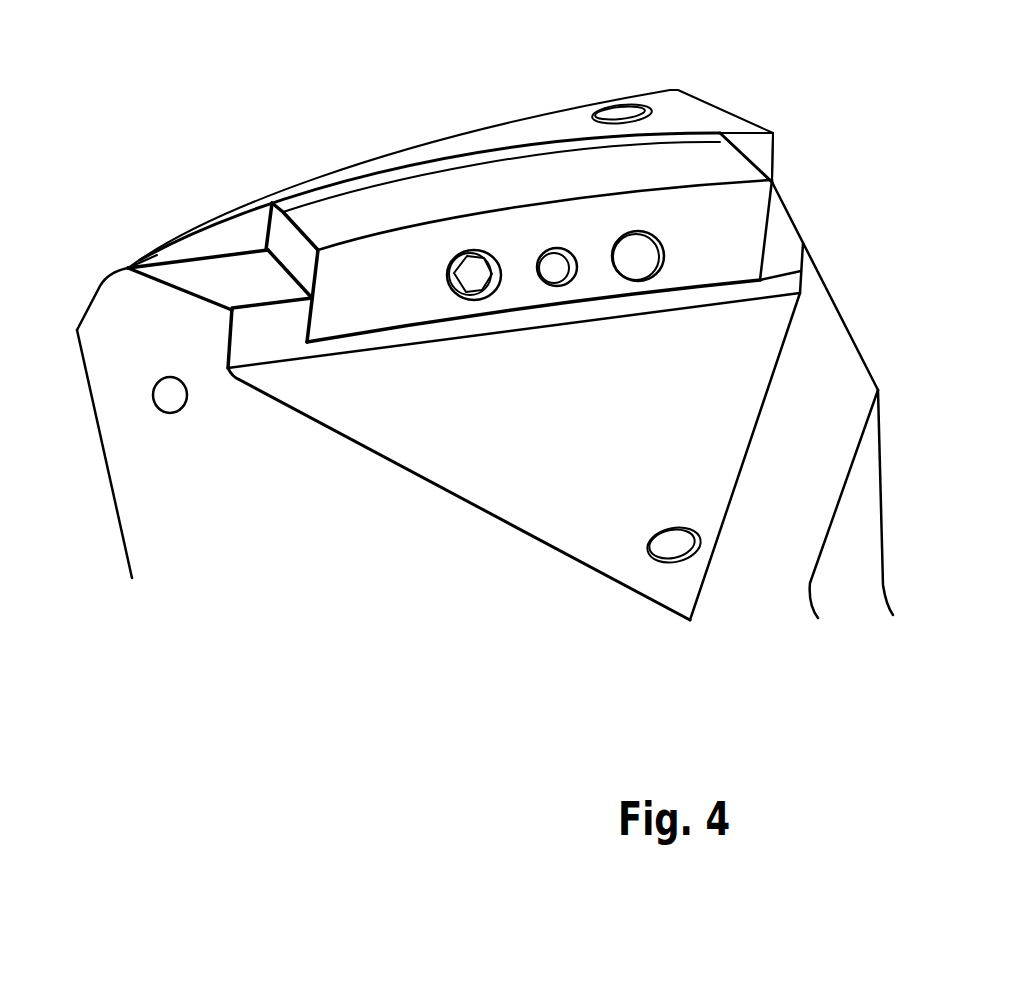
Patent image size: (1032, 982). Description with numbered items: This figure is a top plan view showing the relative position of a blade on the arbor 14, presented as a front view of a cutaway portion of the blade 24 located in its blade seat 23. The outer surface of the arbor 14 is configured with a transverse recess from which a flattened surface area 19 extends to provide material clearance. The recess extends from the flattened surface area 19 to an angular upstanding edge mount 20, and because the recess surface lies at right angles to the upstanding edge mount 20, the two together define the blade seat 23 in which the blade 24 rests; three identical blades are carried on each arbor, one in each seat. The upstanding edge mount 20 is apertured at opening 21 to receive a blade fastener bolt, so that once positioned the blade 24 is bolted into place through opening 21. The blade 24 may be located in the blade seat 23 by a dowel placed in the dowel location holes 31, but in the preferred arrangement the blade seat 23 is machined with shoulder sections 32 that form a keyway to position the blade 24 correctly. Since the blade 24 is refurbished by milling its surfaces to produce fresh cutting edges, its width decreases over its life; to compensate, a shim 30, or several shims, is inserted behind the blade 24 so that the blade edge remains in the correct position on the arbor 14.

The arbor 14 is at (328, 97).
The flattened surface area 19 is at (537, 500).
The upstanding edge mount 20 is at (461, 171).
The aperture 21 is at (557, 290).
The blade seat 23 is at (357, 340).
The blade 24 is at (564, 267).
The shim 30 is at (680, 141).
The dowel location hole 31 is at (467, 290).
The shoulder section 32 is at (228, 284).